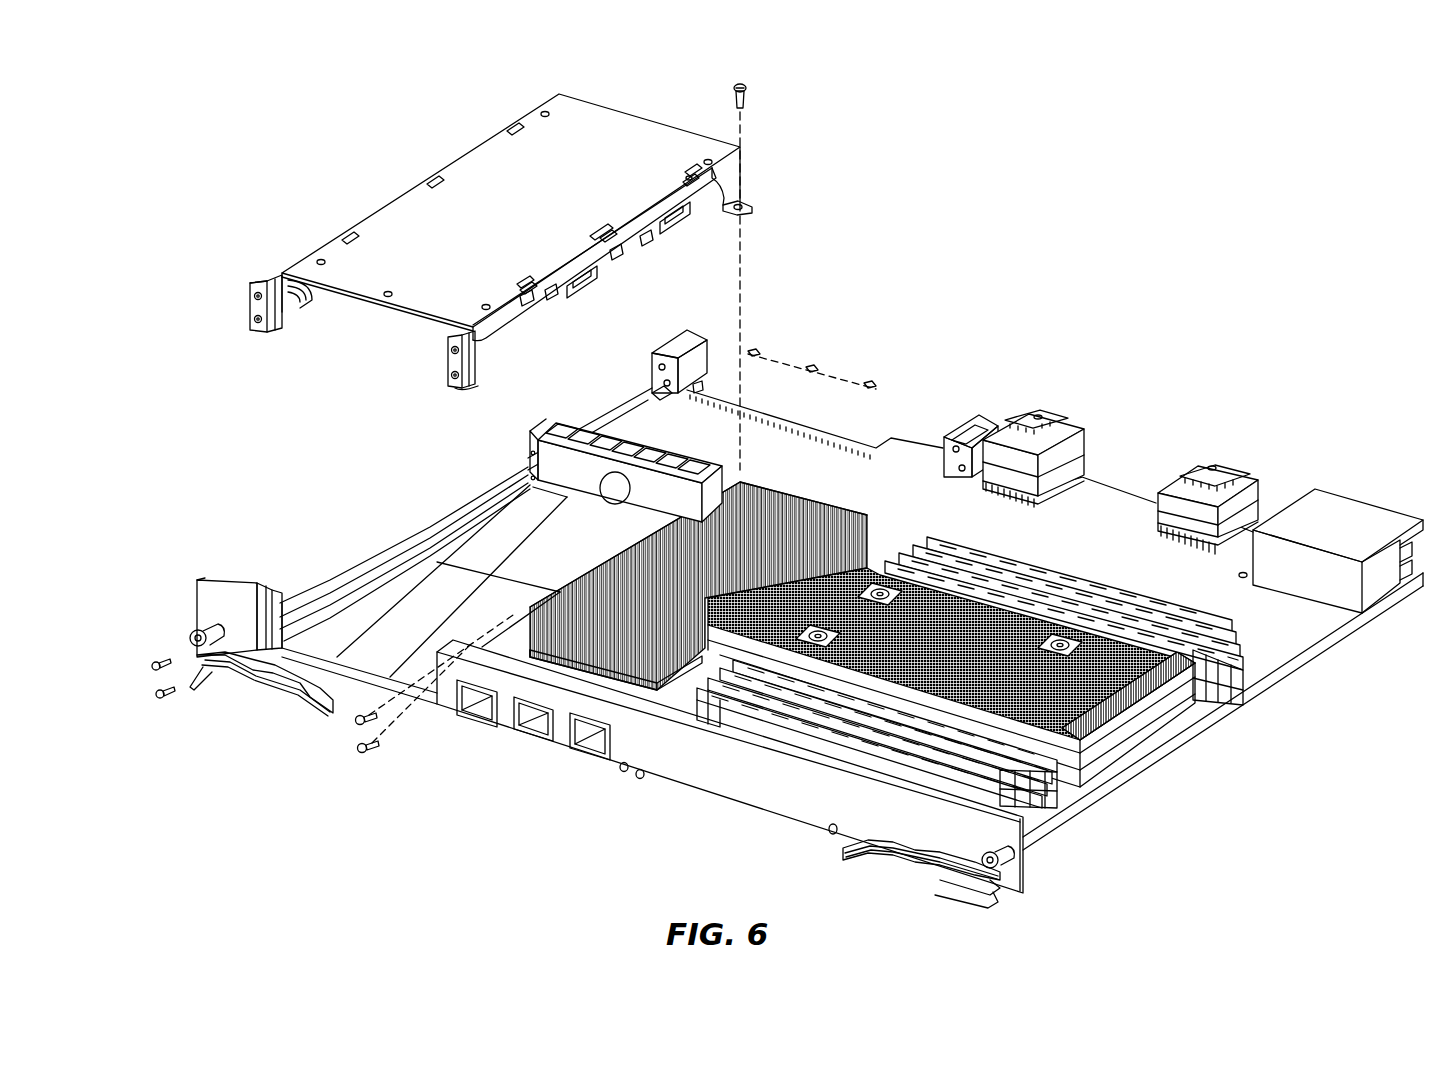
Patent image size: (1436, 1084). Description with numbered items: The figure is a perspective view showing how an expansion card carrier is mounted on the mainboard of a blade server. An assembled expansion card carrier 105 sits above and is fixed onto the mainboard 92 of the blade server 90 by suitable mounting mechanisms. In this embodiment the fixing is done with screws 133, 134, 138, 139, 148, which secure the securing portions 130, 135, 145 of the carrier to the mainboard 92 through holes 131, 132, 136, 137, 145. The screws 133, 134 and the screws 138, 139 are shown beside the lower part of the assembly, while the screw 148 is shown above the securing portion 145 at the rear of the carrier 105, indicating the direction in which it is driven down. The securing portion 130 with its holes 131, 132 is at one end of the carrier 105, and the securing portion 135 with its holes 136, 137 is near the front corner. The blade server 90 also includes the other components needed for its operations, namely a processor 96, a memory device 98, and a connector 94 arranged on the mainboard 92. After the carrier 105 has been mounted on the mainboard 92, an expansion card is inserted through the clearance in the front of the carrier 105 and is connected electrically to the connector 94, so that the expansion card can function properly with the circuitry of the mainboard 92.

The blade server 90 is at (1093, 506).
The mainboard 92 is at (902, 451).
The connector 94 is at (642, 445).
The processor 96 is at (1103, 680).
The memory device 98 is at (842, 635).
The expansion card carrier 105 is at (475, 160).
The securing portion 130 is at (256, 284).
The hole 131 is at (251, 297).
The hole 132 is at (251, 321).
The screw 133 is at (147, 669).
The screw 134 is at (152, 697).
The securing portion 135 is at (472, 372).
The hole 136 is at (449, 349).
The hole 137 is at (449, 375).
The screw 138 is at (350, 730).
The screw 139 is at (352, 757).
The securing portion 145 is at (756, 208).
The screw 148 is at (752, 97).